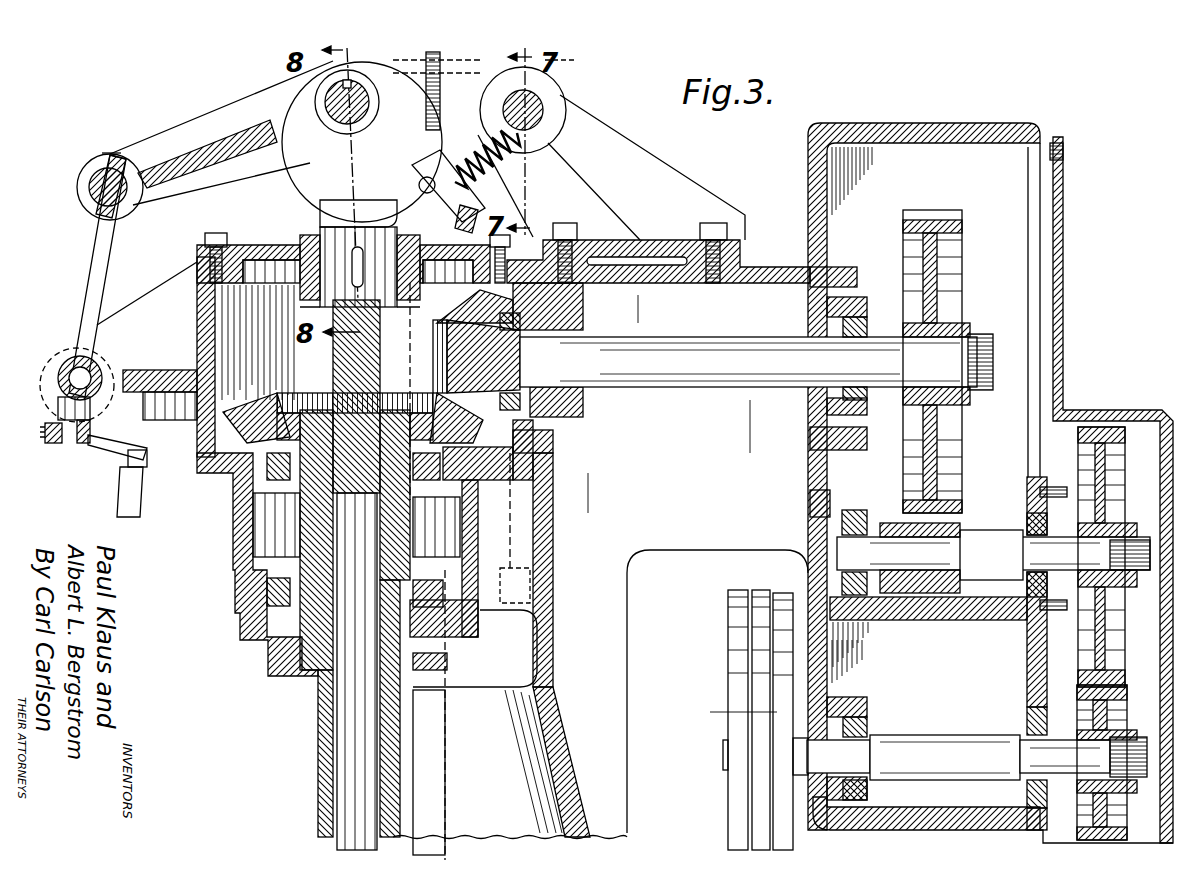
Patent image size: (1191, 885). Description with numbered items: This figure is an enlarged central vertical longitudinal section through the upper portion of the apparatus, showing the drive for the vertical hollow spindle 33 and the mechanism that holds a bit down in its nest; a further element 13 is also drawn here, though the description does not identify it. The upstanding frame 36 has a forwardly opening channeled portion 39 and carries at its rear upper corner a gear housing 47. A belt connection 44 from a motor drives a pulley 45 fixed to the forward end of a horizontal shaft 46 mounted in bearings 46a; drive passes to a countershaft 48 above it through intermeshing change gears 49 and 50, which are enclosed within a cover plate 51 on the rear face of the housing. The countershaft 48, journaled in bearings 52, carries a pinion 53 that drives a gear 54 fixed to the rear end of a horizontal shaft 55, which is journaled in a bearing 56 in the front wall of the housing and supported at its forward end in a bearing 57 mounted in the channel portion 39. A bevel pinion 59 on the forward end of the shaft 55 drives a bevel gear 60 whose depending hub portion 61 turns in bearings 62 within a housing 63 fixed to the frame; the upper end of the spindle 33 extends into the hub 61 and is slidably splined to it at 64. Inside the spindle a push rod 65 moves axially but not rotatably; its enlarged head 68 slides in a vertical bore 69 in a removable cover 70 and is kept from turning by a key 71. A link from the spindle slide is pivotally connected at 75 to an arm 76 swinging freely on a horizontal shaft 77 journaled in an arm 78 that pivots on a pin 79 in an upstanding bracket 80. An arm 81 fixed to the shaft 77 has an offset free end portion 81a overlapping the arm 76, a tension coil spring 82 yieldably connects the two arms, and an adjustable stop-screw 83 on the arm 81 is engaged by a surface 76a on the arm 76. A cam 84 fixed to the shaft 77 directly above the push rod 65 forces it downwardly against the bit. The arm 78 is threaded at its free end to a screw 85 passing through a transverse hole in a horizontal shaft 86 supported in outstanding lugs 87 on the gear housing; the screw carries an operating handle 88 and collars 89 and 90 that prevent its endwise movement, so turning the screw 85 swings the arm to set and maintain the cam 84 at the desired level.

The pin rod 13 is at (480, 198).
The spindle 33 is at (320, 793).
The frame 36 is at (683, 540).
The channeled portion 39 is at (553, 534).
The belt connection 44 is at (738, 697).
The pulley 45 is at (723, 805).
The horizontal shaft 46 is at (942, 733).
The bearings 46a is at (863, 722).
The gear housing 47 is at (897, 828).
The countershaft 48 is at (980, 580).
The change gear 49 is at (1120, 718).
The change gear 50 is at (1113, 410).
The cover plate 51 is at (1138, 403).
The bearings 52 is at (857, 520).
The pinion 53 is at (930, 593).
The gear 54 is at (932, 220).
The horizontal shaft 55 is at (712, 388).
The bearing 56 is at (867, 322).
The bearing 57 is at (580, 411).
The bevel pinion 59 is at (553, 445).
The bevel gear 60 is at (243, 420).
The hub portion 61 is at (240, 523).
The bearings 62 is at (267, 478).
The housing 63 is at (240, 538).
The spline 64 is at (397, 677).
The push rod 65 is at (350, 807).
The head 68 is at (378, 318).
The bore 69 is at (327, 311).
The cover 70 is at (203, 248).
The key 71 is at (350, 282).
The pivotal connection 75 is at (396, 213).
The arm 76 is at (433, 282).
The surface 76a is at (480, 130).
The horizontal shaft 77 is at (315, 102).
The arm 78 is at (182, 130).
The pin 79 is at (545, 104).
The bracket 80 is at (690, 213).
The arm 81 is at (560, 118).
The free end portion 81a is at (552, 82).
The tension coil spring 82 is at (510, 190).
The stop-screw 83 is at (442, 97).
The cam 84 is at (300, 186).
The screw 85 is at (95, 252).
The horizontal shaft 86 is at (100, 378).
The lugs 87 is at (143, 305).
The operating handle 88 is at (110, 448).
The collar 89 is at (67, 327).
The collar 90 is at (62, 407).